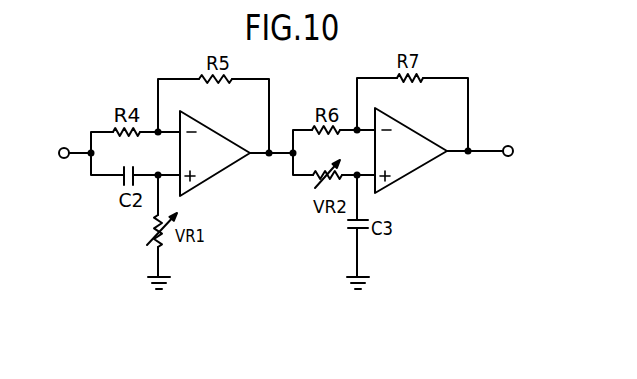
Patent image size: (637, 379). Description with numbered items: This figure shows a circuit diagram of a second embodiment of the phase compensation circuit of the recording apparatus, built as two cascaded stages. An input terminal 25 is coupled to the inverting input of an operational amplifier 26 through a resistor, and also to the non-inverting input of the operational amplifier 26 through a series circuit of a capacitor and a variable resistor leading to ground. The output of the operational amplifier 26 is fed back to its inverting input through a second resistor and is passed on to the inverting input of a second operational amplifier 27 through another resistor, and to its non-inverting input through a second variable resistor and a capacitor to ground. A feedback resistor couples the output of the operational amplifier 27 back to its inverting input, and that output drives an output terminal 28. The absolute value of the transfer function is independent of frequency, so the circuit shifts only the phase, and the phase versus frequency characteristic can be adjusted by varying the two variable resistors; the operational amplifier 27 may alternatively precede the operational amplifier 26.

The input terminal 25 is at (65, 148).
The operational amplifier 26 is at (221, 174).
The operational amplifier 27 is at (422, 168).
The output terminal 28 is at (508, 146).